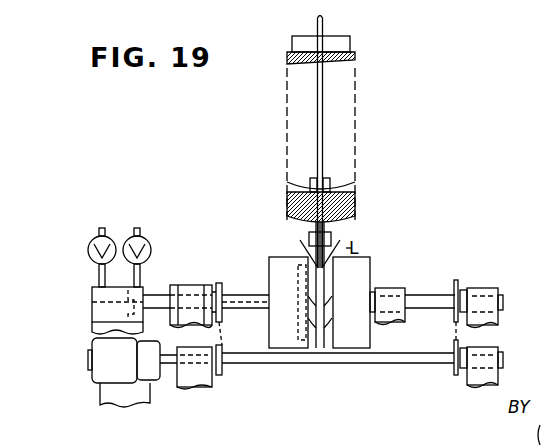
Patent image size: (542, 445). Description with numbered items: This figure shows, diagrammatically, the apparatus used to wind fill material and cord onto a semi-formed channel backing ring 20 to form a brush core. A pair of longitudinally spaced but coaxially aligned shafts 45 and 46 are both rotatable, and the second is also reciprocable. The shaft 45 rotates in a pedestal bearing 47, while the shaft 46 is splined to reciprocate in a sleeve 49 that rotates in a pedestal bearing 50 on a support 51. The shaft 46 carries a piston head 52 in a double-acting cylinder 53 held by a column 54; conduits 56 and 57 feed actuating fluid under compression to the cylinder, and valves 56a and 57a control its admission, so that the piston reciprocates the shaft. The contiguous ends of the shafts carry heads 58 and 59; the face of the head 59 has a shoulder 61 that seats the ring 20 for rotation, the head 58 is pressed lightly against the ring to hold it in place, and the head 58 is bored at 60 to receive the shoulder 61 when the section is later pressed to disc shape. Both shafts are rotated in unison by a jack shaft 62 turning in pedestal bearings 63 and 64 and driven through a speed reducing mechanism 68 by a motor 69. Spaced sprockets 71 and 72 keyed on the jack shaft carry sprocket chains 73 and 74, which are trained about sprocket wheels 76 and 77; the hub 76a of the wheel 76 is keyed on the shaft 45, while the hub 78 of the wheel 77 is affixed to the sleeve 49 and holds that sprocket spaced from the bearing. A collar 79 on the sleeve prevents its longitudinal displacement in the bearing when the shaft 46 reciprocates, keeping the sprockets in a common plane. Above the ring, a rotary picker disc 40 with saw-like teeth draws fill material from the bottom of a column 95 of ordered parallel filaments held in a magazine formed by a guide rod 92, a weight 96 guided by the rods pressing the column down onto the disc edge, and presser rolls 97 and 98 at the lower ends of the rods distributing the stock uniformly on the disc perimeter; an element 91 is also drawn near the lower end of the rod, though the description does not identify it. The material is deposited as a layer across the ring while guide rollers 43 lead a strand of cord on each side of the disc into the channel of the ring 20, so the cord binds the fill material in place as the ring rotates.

The channel backing ring 20 is at (319, 330).
The picker disc 40 is at (312, 232).
The guide rollers 43 is at (331, 240).
The shaft 45 is at (435, 295).
The shaft 46 is at (250, 308).
The pedestal bearing 47 is at (400, 290).
The sleeve 49 is at (190, 285).
The pedestal bearing 50 is at (205, 287).
The support 51 is at (170, 328).
The piston head 52 is at (128, 298).
The double-acting cylinder 53 is at (92, 310).
The column 54 is at (92, 327).
The conduit 56 is at (99, 276).
The valve 56a is at (88, 248).
The conduit 57 is at (140, 274).
The valve 57a is at (151, 250).
The head 58 is at (288, 302).
The head 59 is at (354, 302).
The bore 60 is at (302, 300).
The shoulder 61 is at (324, 336).
The jack shaft 62 is at (283, 365).
The pedestal bearing 63 is at (198, 385).
The pedestal bearing 64 is at (495, 350).
The speed reducing mechanism 68 is at (152, 375).
The motor 69 is at (100, 385).
The sprocket 71 is at (224, 376).
The sprocket 72 is at (455, 376).
The sprocket chain 73 is at (223, 340).
The sprocket chain 74 is at (454, 334).
The sprocket wheel 76 is at (456, 280).
The hub 76a is at (464, 290).
The sprocket wheel 77 is at (224, 288).
The hub 78 is at (219, 283).
The collar 79 is at (173, 287).
The rod 91 is at (333, 226).
The guide rod 92 is at (316, 106).
The column of filaments 95 is at (300, 200).
The weight 96 is at (298, 43).
The presser roll 97 is at (312, 185).
The presser roll 98 is at (330, 185).